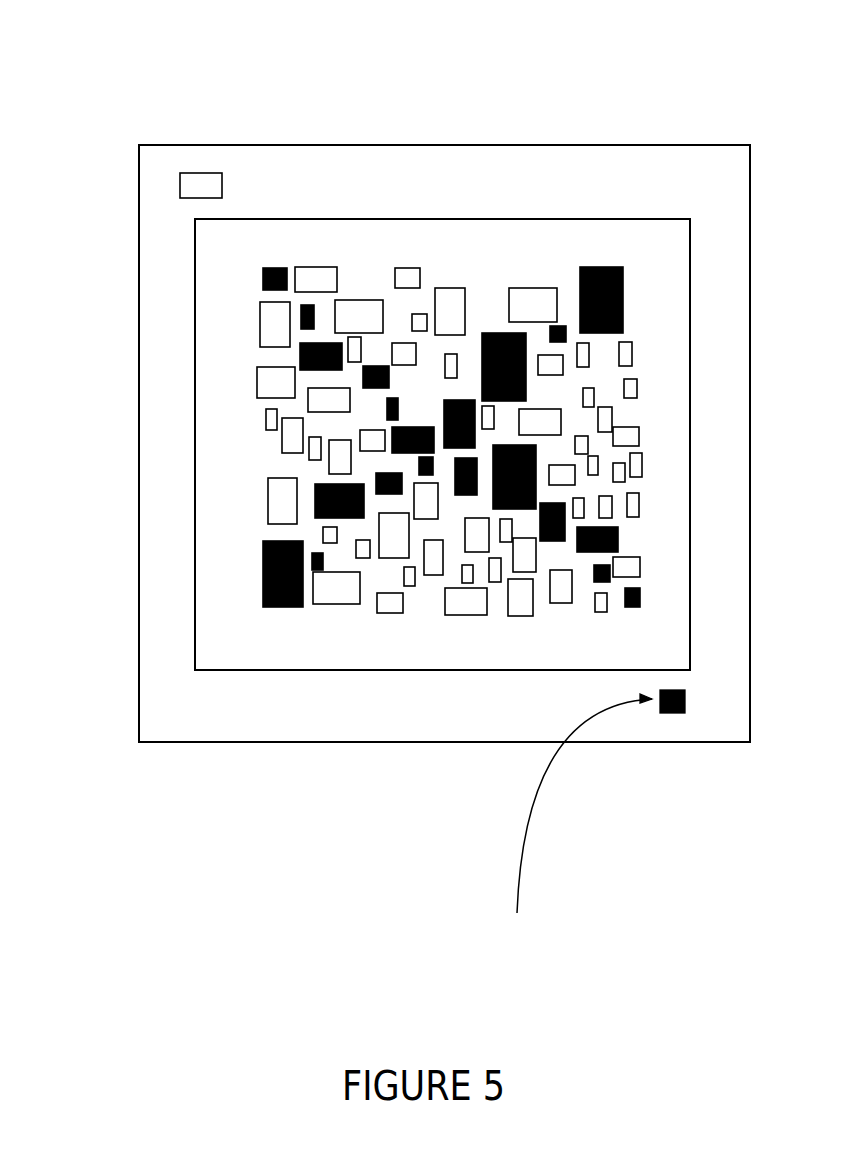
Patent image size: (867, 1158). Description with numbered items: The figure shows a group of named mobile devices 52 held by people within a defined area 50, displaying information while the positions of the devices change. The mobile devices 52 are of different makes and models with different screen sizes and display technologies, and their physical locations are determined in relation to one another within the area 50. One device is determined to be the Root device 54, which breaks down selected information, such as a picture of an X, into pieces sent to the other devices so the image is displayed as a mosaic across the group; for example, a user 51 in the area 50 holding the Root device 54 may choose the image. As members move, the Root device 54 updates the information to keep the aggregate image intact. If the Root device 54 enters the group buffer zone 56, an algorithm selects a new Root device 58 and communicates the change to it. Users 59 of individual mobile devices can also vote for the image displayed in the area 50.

The area 50 is at (357, 146).
The user 51 is at (450, 637).
The mobile devices 52 is at (222, 424).
The Root device 54 is at (336, 588).
The group buffer zone 56 is at (241, 445).
The new Root device 58 is at (359, 316).
The users 59 is at (533, 305).